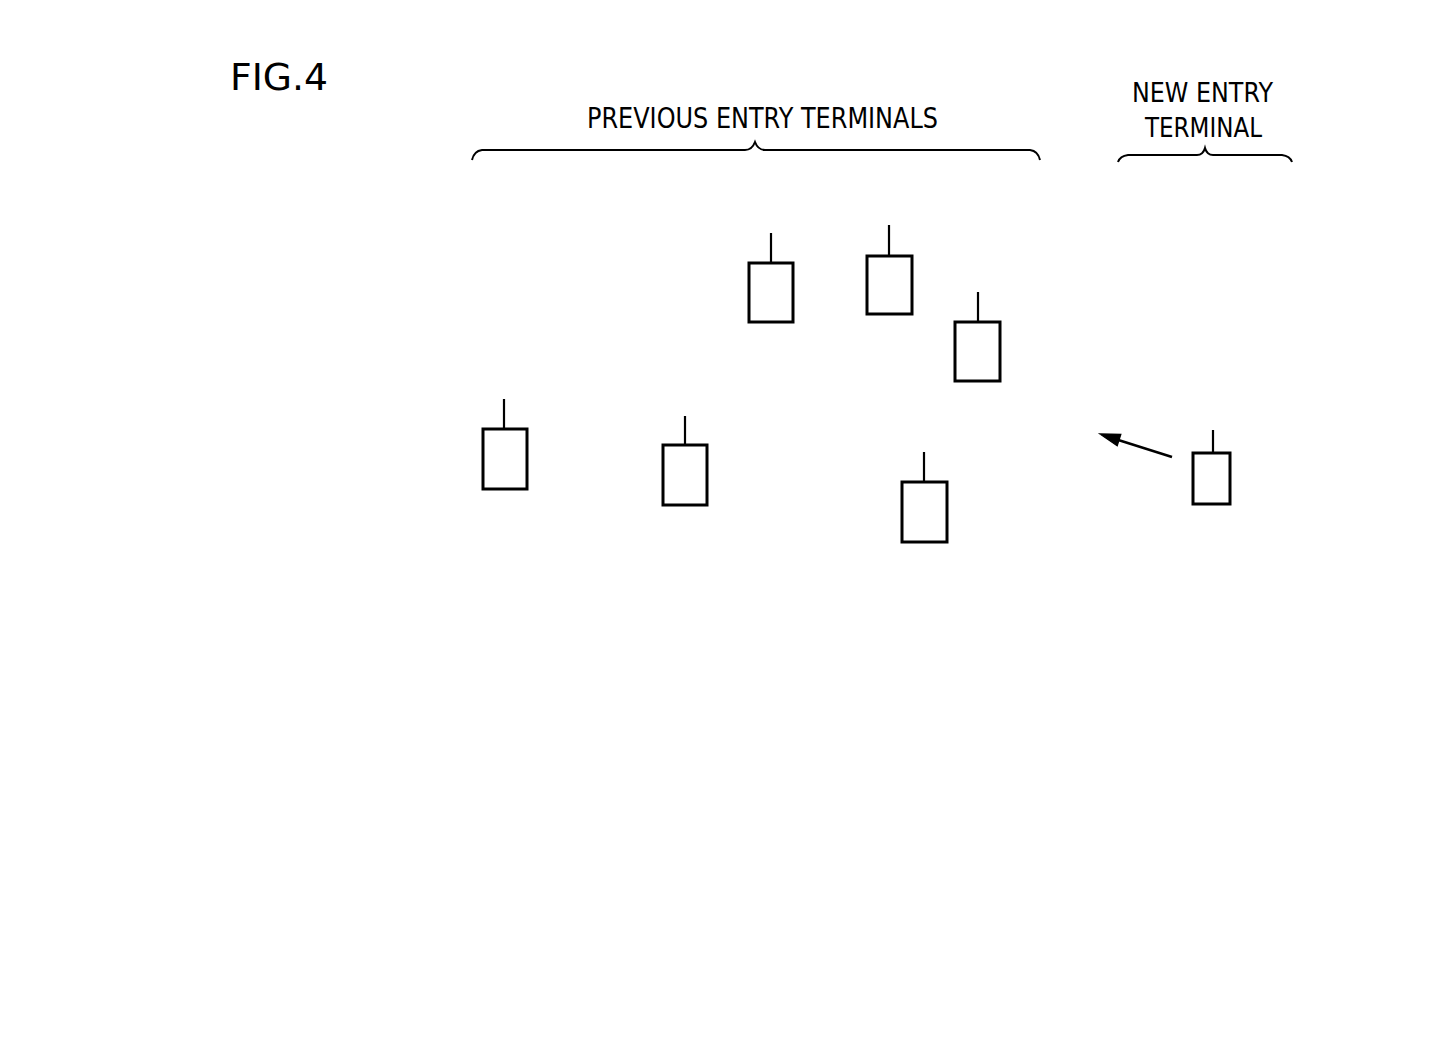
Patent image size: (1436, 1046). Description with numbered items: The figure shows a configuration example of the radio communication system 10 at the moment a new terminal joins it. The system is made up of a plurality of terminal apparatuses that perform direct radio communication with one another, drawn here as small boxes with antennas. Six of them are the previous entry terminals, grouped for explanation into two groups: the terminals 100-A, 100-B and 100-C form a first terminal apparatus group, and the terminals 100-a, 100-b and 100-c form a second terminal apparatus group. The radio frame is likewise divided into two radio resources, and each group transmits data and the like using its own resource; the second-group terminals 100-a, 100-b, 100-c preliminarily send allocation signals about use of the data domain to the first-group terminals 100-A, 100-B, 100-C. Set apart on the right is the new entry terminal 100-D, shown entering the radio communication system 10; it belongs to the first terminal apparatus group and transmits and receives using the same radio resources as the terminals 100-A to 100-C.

The radio communication system 10 is at (929, 755).
The terminal apparatus 100-A is at (749, 283).
The terminal apparatus 100-b is at (912, 271).
The terminal apparatus 100-B is at (1000, 338).
The terminal apparatus 100-C is at (483, 452).
The terminal apparatus 100-a is at (663, 490).
The terminal apparatus 100-c is at (947, 526).
The new entry terminal 100-D is at (1230, 462).